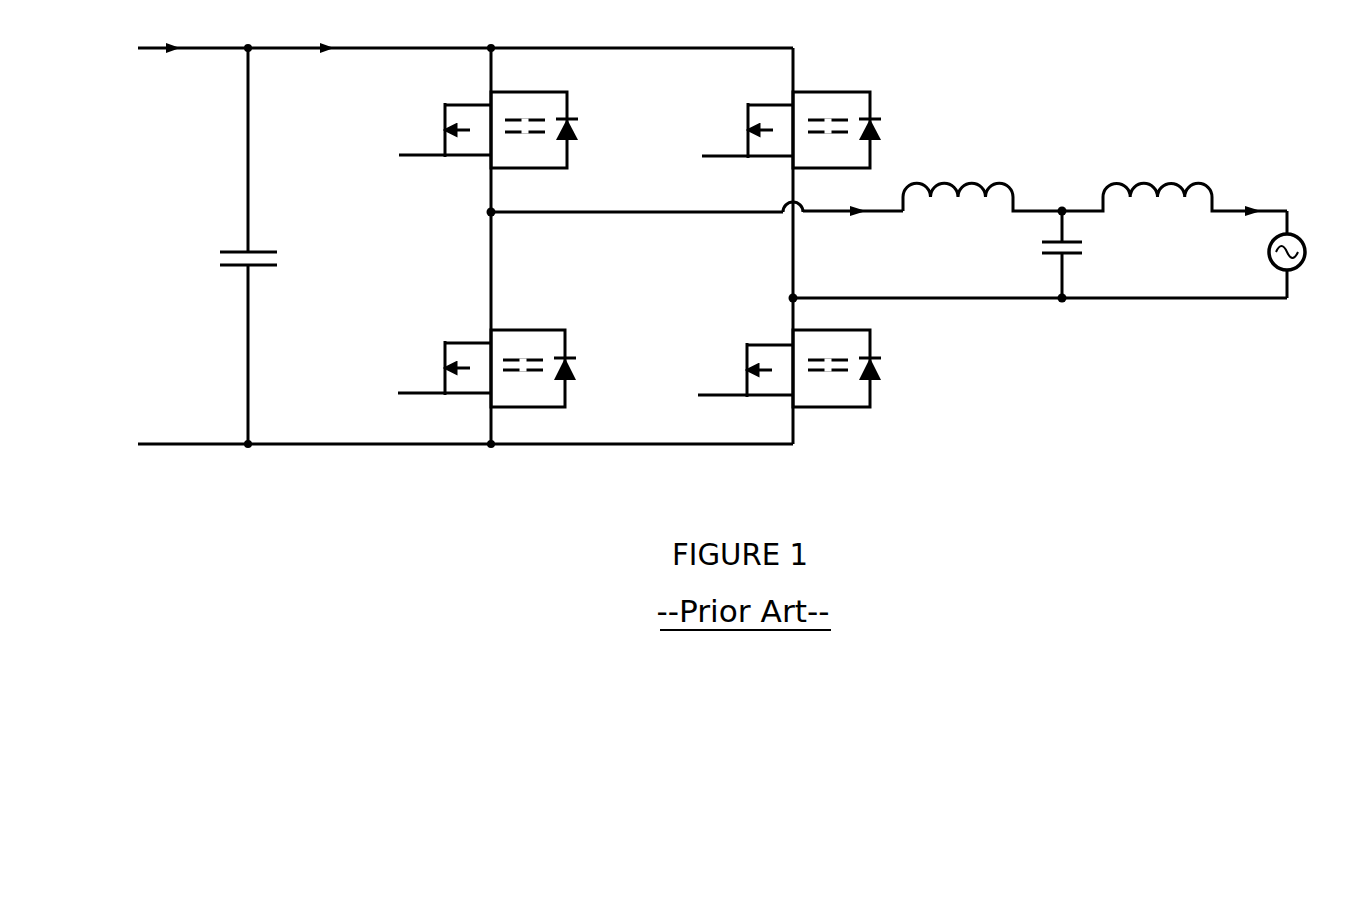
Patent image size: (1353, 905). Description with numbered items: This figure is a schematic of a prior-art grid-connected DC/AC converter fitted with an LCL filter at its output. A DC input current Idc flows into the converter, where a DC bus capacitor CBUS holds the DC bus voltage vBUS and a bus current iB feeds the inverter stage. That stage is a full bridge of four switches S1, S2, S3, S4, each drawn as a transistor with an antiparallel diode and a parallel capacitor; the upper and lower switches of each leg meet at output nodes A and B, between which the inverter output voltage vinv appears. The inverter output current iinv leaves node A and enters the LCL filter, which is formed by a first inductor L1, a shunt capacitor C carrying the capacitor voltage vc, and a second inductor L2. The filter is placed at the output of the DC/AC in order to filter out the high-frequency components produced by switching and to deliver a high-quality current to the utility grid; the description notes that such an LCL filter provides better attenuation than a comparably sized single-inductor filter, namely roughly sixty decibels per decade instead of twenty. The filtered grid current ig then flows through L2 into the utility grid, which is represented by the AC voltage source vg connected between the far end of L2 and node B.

The DC input current Idc is at (188, 88).
The bus current iB is at (315, 89).
The DC bus capacitor CBUS is at (275, 246).
The DC bus voltage vBUS is at (206, 313).
The switch S1 (MOSFET with body diode and capacitor) S1 is at (483, 121).
The switch S2 (MOSFET with body diode and capacitor) S2 is at (481, 364).
The switch S3 (MOSFET with body diode and capacitor) S3 is at (785, 121).
The switch S4 (MOSFET with body diode and capacitor) S4 is at (785, 368).
The inverter output node A is at (628, 212).
The inverter output node B is at (1022, 298).
The inverter output voltage vinv is at (619, 262).
The inverter output current iinv is at (853, 233).
The first filter inductor L1 is at (982, 179).
The filter capacitor C is at (1078, 255).
The filter capacitor voltage vc is at (1020, 251).
The second filter inductor L2 is at (1174, 177).
The grid current ig is at (1250, 192).
The AC grid voltage source vg is at (1289, 254).